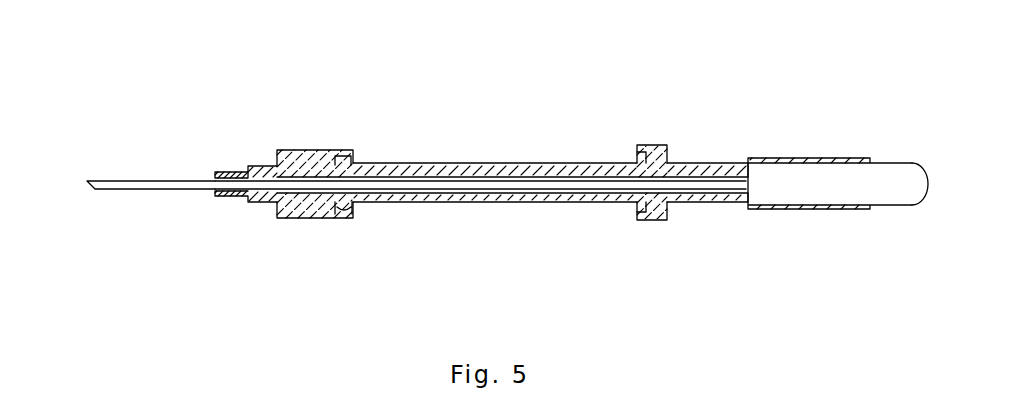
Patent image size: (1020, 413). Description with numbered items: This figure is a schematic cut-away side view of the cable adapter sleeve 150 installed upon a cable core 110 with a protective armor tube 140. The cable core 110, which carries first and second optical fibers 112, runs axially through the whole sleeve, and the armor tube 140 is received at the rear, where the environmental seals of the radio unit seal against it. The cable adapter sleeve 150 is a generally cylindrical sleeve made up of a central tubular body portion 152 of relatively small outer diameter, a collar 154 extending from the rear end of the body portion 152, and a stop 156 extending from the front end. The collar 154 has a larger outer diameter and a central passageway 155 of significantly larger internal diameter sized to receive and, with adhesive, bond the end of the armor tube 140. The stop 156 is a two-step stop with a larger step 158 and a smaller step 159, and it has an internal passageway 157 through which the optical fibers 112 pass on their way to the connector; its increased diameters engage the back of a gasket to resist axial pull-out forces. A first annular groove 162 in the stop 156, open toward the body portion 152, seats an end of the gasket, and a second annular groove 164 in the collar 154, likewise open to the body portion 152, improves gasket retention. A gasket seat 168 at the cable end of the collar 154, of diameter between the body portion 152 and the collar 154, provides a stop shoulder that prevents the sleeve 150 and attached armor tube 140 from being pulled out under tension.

The cable core 110 is at (180, 178).
The optical fiber 112 is at (142, 180).
The protective armor tube 140 is at (785, 183).
The cable adapter sleeve 150 is at (522, 163).
The body portion 152 is at (500, 163).
The collar 154 is at (652, 145).
The central passageway 155 is at (813, 187).
The stop 156 is at (322, 150).
The internal passageway 157 is at (551, 183).
The larger step 158 is at (310, 150).
The smaller step 159 is at (260, 166).
The first annular groove 162 is at (347, 158).
The second annular groove 164 is at (638, 157).
The gasket seat 168 is at (722, 208).